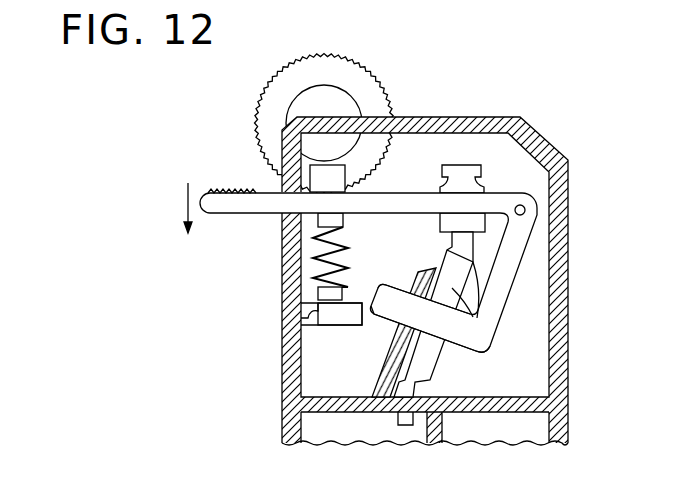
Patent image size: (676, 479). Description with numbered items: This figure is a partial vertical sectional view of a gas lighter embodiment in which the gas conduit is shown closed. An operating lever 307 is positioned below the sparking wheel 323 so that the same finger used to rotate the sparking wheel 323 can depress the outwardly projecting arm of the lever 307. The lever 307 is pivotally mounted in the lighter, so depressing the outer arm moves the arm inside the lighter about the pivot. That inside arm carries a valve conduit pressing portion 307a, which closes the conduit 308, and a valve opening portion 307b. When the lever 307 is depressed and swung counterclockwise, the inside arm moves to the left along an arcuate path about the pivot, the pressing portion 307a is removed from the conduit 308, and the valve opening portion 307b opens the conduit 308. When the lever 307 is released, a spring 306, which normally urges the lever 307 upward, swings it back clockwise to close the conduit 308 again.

The sparking wheel 323 is at (345, 94).
The spring 306 is at (313, 270).
The operating lever 307 is at (223, 213).
The valve conduit pressing portion 307a is at (438, 341).
The valve opening portion 307b is at (453, 367).
The conduit 308 is at (448, 288).